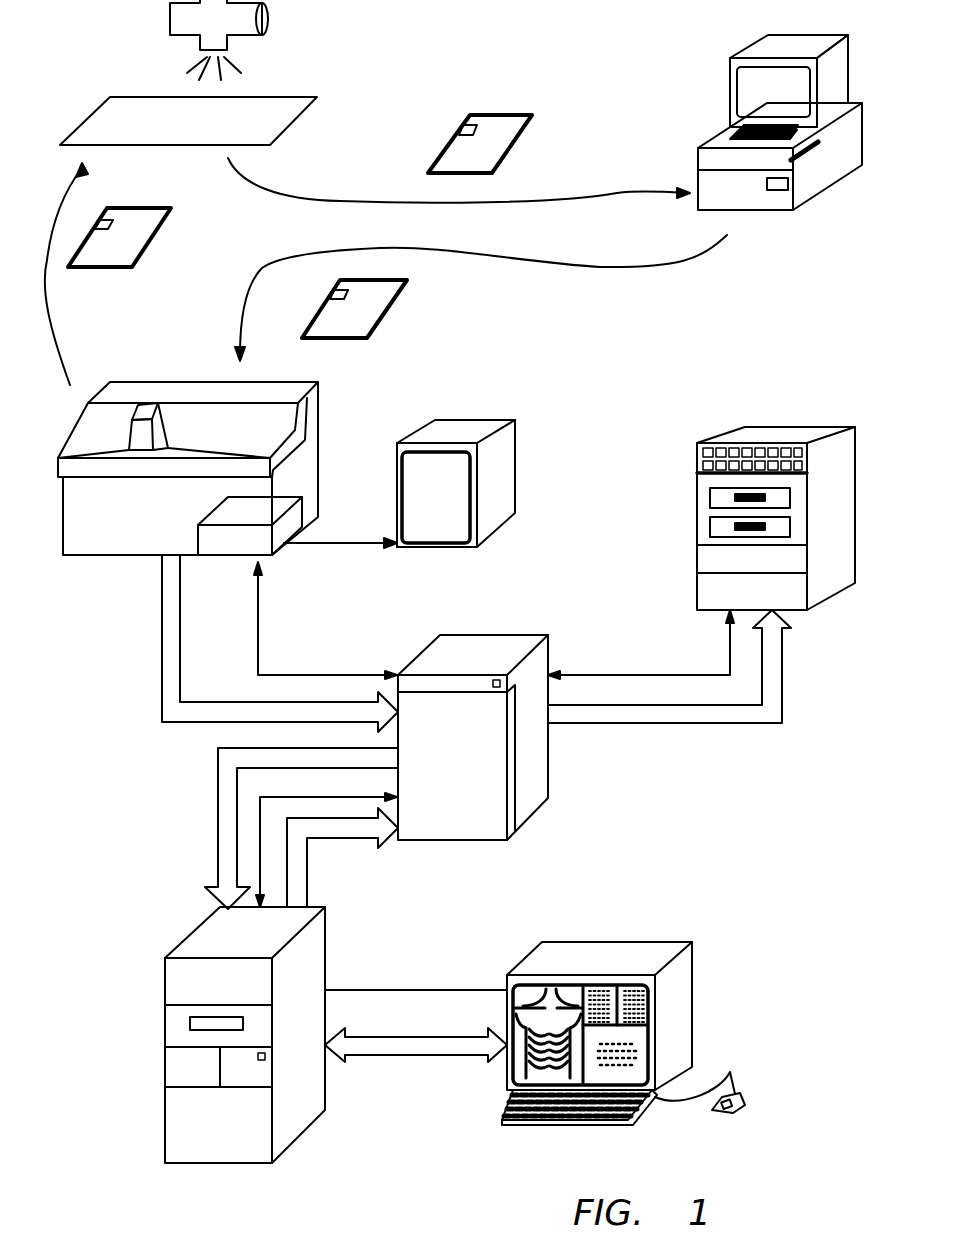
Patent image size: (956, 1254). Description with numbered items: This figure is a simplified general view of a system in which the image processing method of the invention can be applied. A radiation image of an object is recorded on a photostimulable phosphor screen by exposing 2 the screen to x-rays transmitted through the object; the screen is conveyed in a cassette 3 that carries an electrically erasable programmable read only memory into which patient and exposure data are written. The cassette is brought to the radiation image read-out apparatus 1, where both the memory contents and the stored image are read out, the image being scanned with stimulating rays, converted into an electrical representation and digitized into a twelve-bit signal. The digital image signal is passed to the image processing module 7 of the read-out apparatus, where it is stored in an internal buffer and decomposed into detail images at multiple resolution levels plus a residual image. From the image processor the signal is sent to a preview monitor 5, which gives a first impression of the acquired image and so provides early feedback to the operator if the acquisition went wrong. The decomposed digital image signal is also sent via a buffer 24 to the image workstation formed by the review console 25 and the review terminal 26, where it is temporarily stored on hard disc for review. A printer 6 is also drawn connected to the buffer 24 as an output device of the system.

The radiation image read-out apparatus 1 is at (97, 425).
The exposing 2 is at (240, 38).
The cassette 3 is at (498, 146).
The preview monitor 5 is at (497, 510).
The printer 6 is at (823, 590).
The image processing module 7 is at (283, 538).
The buffer 24 is at (495, 823).
The review console 25 is at (288, 1128).
The review terminal 26 is at (594, 950).